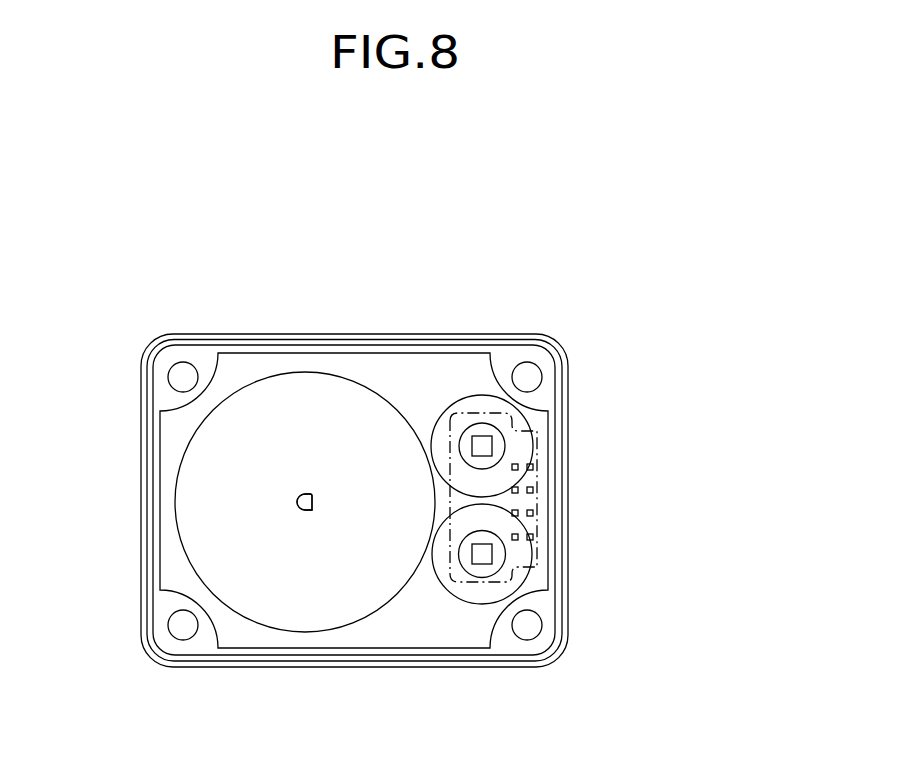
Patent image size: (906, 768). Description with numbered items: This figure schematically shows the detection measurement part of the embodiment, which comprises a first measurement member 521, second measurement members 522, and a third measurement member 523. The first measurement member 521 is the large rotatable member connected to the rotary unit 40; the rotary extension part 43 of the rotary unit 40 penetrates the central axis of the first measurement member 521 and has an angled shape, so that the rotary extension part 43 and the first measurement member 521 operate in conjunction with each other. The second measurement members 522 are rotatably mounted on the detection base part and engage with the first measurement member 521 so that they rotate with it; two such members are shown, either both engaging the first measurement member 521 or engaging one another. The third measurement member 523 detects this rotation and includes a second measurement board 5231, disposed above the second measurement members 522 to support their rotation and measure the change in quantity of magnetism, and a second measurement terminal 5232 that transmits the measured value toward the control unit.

The first measurement member 521 is at (308, 390).
The rotary extension part 43 is at (305, 502).
The rotary unit 40 is at (304, 502).
The third measurement member 523 is at (610, 492).
The second measurement board 5231 is at (520, 428).
The second measurement terminal 5232 is at (533, 513).
The second measurement member 522 is at (488, 595).